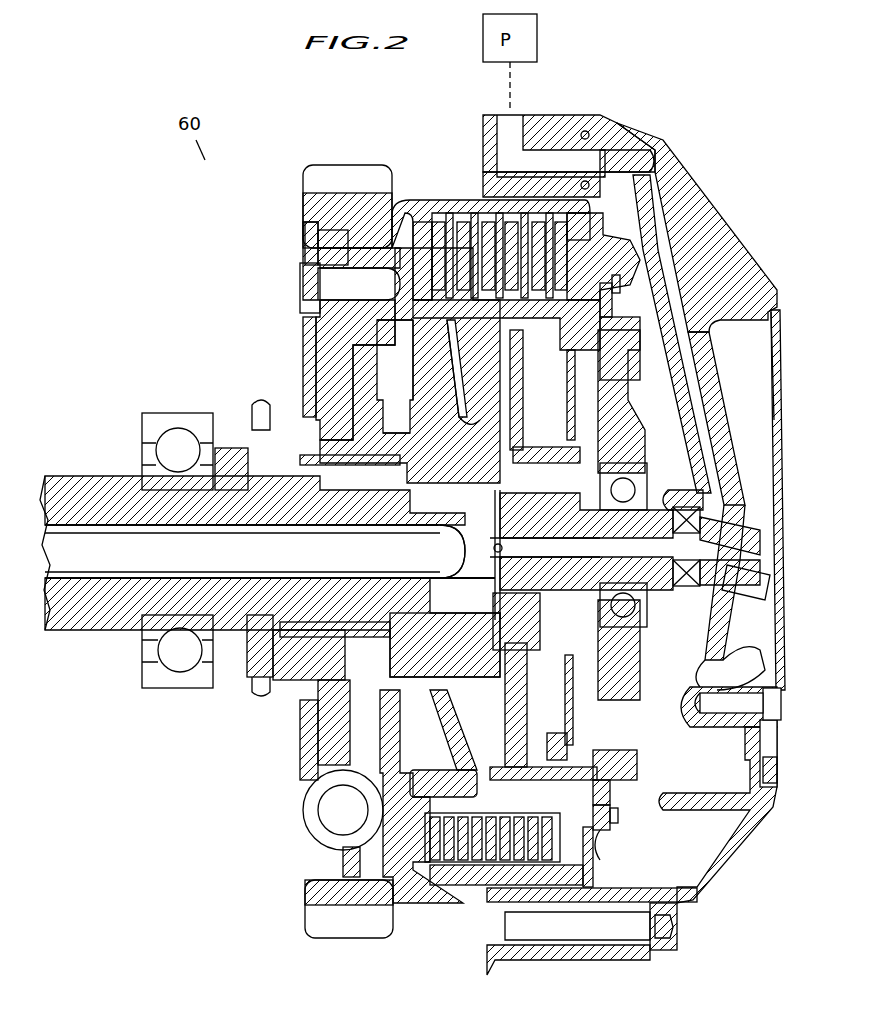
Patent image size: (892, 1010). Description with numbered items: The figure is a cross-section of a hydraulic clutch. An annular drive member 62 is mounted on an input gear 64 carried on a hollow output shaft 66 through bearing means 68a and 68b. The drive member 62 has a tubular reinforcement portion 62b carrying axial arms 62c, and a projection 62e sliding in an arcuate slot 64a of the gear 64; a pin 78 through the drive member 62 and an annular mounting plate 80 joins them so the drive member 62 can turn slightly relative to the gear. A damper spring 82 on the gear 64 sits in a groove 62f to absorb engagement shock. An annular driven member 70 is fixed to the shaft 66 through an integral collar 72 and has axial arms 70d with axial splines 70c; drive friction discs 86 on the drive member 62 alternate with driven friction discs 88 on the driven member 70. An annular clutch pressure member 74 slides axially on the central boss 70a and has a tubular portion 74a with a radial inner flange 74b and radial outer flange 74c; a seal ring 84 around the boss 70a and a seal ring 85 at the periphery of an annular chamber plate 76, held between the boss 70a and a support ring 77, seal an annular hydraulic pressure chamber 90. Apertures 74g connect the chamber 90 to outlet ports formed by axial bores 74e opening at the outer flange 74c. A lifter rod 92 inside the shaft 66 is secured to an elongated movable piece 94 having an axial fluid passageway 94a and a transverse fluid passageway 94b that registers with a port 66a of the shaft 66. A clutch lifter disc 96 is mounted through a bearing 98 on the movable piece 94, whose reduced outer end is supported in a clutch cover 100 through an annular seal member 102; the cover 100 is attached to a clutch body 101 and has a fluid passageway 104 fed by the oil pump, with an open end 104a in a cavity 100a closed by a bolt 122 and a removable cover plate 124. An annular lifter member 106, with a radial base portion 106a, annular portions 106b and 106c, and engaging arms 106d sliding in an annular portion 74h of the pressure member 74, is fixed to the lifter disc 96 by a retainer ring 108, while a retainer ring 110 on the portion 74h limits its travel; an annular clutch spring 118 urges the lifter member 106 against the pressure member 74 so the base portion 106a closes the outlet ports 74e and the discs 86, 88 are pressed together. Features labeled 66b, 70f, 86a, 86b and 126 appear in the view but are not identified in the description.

The annular drive member 62 is at (395, 215).
The tubular reinforcement portion 62b is at (425, 905).
The axial arms 62c is at (410, 210).
The projection 62e is at (303, 258).
The groove 62f is at (315, 830).
The input gear 64 is at (330, 175).
The arcuate slot 64a is at (305, 322).
The hollow output shaft 66 is at (125, 478).
The port 66a is at (490, 512).
The axial bore 66b is at (318, 526).
The bearing means 68a is at (248, 448).
The bearing means 68b is at (265, 425).
The annular driven member 70 is at (450, 352).
The central boss 70a is at (450, 412).
The axial splines 70c is at (440, 315).
The axial arms 70d is at (455, 340).
The hub slot 70f is at (398, 272).
The integral collar 72 is at (410, 612).
The annular clutch pressure member 74 is at (590, 318).
The tubular portion 74a is at (545, 330).
The radial inner flange 74b is at (482, 720).
The radial outer flange 74c is at (600, 232).
The axial bore 74e is at (535, 818).
The apertures 74g is at (498, 818).
The annular portion 74h is at (635, 272).
The annular chamber plate 76 is at (518, 717).
The support ring 77 is at (548, 458).
The pin 78 is at (300, 290).
The annular mounting plate 80 is at (303, 225).
The damper spring 82 is at (302, 808).
The seal ring 84 is at (470, 430).
The seal ring 85 is at (590, 748).
The drive friction discs 86 is at (450, 222).
The bolt 86a is at (590, 160).
The plate carrier 86b is at (435, 228).
The driven friction discs 88 is at (490, 222).
The annular hydraulic pressure chamber 90 is at (515, 396).
The lifter rod 92 is at (128, 595).
The elongated movable piece 94 is at (690, 520).
The axial fluid passageway 94a is at (745, 540).
The transverse fluid passageway 94b is at (492, 545).
The clutch lifter disc 96 is at (625, 418).
The bearing 98 is at (645, 490).
The clutch cover 100 is at (690, 190).
The cavity 100a is at (772, 340).
The clutch body 101 is at (540, 125).
The annular seal member 102 is at (718, 525).
The fluid passageway 104 is at (705, 403).
The open end 104a is at (765, 575).
The annular lifter member 106 is at (612, 340).
The radial base portion 106a is at (603, 818).
The annular portion 106b is at (600, 782).
The annular portion 106c is at (640, 768).
The engaging arms 106d is at (600, 838).
The retainer ring 108 is at (625, 755).
The retainer ring 110 is at (618, 820).
The annular clutch spring 118 is at (565, 672).
The bolt 122 is at (770, 598).
The cover plate 124 is at (784, 432).
The bolt 126 is at (776, 705).